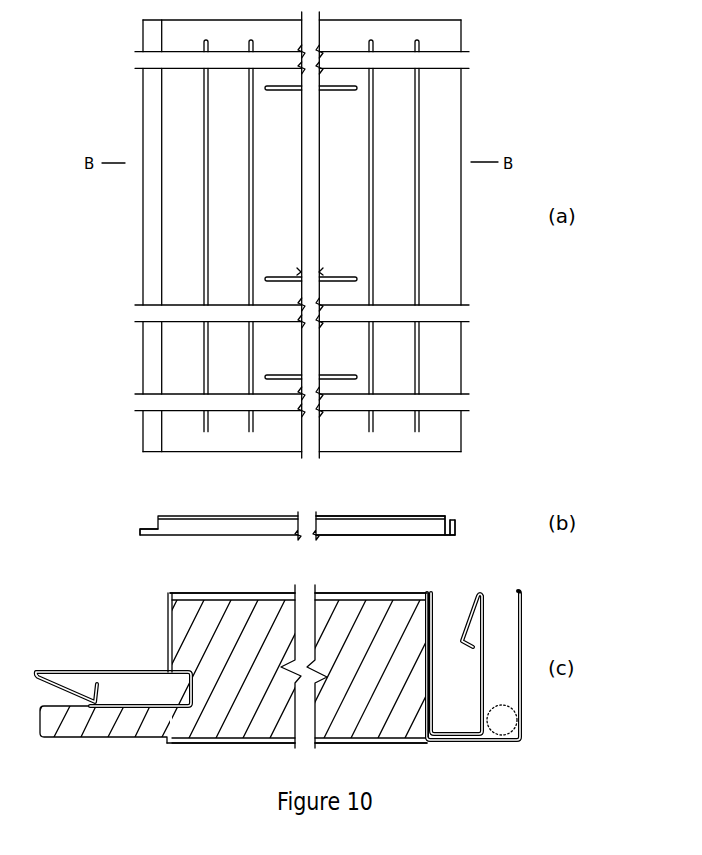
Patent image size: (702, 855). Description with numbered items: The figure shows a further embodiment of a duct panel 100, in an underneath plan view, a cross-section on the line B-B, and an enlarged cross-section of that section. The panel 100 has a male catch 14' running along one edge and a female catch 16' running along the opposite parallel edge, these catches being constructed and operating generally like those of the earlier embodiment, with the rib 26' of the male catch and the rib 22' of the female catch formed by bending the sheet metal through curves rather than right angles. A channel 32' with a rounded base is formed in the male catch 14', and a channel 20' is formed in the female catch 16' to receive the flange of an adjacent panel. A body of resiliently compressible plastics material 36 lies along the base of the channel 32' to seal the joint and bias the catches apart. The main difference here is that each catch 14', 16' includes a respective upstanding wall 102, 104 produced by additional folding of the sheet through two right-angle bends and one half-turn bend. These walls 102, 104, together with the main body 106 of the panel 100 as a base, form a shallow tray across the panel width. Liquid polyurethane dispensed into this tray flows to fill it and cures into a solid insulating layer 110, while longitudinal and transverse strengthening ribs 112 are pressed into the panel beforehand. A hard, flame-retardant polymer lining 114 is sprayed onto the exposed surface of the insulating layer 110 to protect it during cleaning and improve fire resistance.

The duct panel 100 is at (192, 221).
The strengthening ribs 112 is at (287, 275).
The female catch 16' is at (113, 529).
The male catch 14' is at (494, 545).
The upstanding wall 102 is at (158, 522).
The upstanding wall 104 is at (445, 524).
The insulating layer 110 is at (272, 524).
The hard polymer lining 114 is at (360, 515).
The main body 106 is at (388, 537).
The channel 20' is at (113, 675).
The rib 22' is at (65, 671).
The rib 26' is at (495, 663).
The channel 32' is at (494, 665).
The body of resiliently compressible plastics material 36 is at (502, 718).